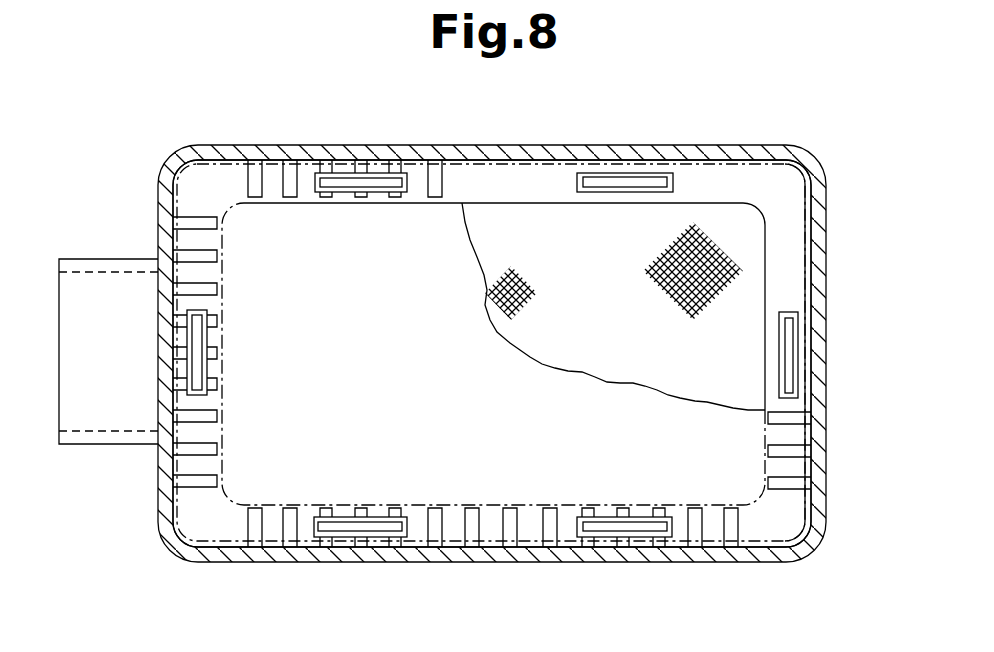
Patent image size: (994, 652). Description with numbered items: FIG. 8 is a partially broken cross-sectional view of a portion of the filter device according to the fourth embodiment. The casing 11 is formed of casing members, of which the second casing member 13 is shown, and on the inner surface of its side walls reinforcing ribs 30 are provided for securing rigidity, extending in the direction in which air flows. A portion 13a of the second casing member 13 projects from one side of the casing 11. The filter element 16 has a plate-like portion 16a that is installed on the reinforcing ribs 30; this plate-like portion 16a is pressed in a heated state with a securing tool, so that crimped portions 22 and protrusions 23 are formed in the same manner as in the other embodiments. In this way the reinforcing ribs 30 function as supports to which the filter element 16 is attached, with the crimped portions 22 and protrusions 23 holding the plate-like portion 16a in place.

The casing 11 is at (377, 160).
The second casing member 13 is at (486, 160).
The protruding portion 13a is at (117, 271).
The filter element 16 is at (580, 372).
The plate-like portion 16a is at (797, 246).
The crimped portion 22 is at (590, 173).
The protrusion 23 is at (650, 177).
The reinforcing rib 30 is at (292, 197).